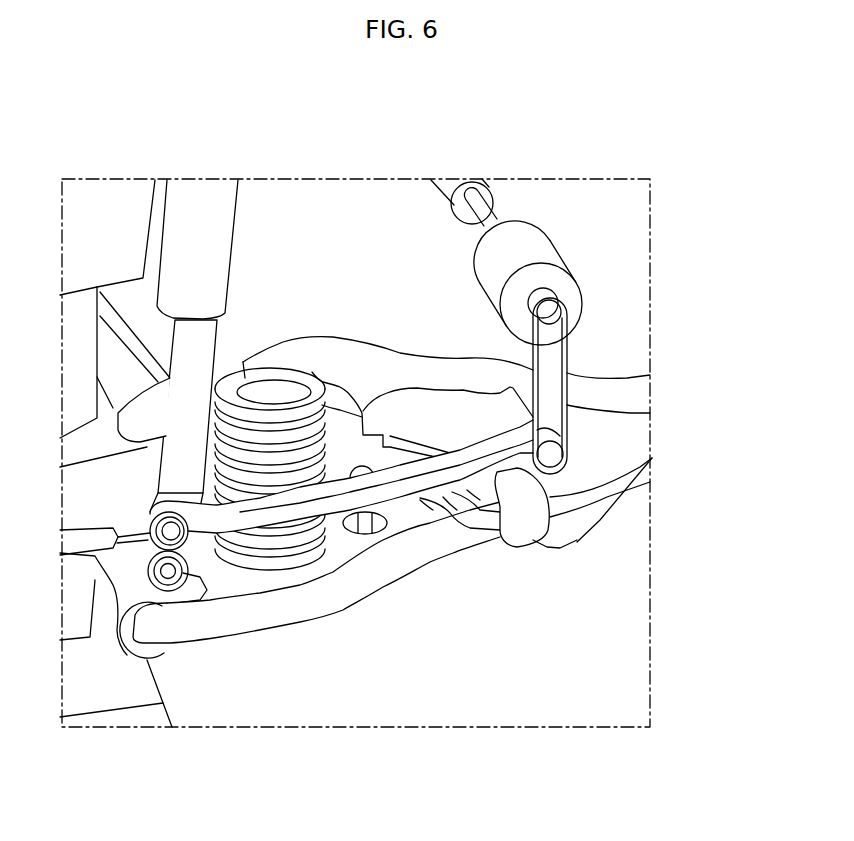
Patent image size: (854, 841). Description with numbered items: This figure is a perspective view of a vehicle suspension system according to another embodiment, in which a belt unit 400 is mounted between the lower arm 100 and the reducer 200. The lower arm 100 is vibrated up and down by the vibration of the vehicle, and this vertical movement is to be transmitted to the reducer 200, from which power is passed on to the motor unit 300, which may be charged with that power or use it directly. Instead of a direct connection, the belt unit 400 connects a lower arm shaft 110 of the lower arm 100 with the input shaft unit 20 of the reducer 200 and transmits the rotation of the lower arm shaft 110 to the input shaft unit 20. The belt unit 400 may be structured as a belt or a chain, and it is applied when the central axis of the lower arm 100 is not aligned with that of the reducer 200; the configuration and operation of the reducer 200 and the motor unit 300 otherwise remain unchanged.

The lower arm 100 is at (432, 545).
The lower arm shaft 110 is at (549, 460).
The reducer 200 is at (531, 255).
The motor unit 300 is at (450, 188).
The belt unit 400 is at (567, 358).
The input shaft unit 20 is at (553, 313).